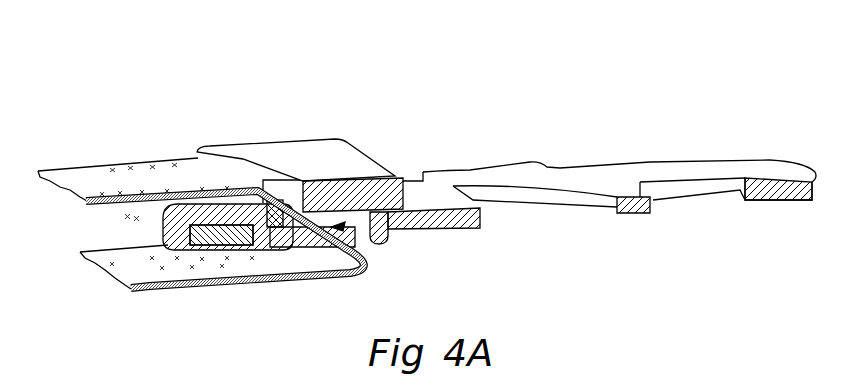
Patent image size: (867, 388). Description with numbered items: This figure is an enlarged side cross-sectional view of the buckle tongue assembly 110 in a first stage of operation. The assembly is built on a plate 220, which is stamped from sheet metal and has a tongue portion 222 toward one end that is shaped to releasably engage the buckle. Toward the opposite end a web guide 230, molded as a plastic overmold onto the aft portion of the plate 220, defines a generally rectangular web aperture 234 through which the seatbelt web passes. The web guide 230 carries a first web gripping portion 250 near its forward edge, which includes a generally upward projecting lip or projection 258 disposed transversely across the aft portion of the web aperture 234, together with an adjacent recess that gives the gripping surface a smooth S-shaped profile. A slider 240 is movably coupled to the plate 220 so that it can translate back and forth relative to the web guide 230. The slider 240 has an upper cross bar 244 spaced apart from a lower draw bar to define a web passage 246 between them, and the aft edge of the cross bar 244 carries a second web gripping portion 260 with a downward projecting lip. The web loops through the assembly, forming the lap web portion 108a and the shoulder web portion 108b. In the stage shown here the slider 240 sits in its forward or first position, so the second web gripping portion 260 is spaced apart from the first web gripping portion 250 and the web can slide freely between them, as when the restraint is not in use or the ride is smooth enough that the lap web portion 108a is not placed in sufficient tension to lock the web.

The buckle tongue assembly 110 is at (489, 84).
The lap web portion 108a is at (153, 292).
The shoulder web portion 108b is at (120, 165).
The web guide 230 is at (123, 217).
The slider 240 is at (372, 148).
The cross bar 244 is at (324, 143).
The web passage 246 is at (393, 185).
The first web gripping portion 250 is at (278, 197).
The projection 258 is at (283, 278).
The second web gripping portion 260 is at (338, 287).
The web aperture 234 is at (372, 243).
The plate 220 is at (584, 167).
The tongue portion 222 is at (686, 163).